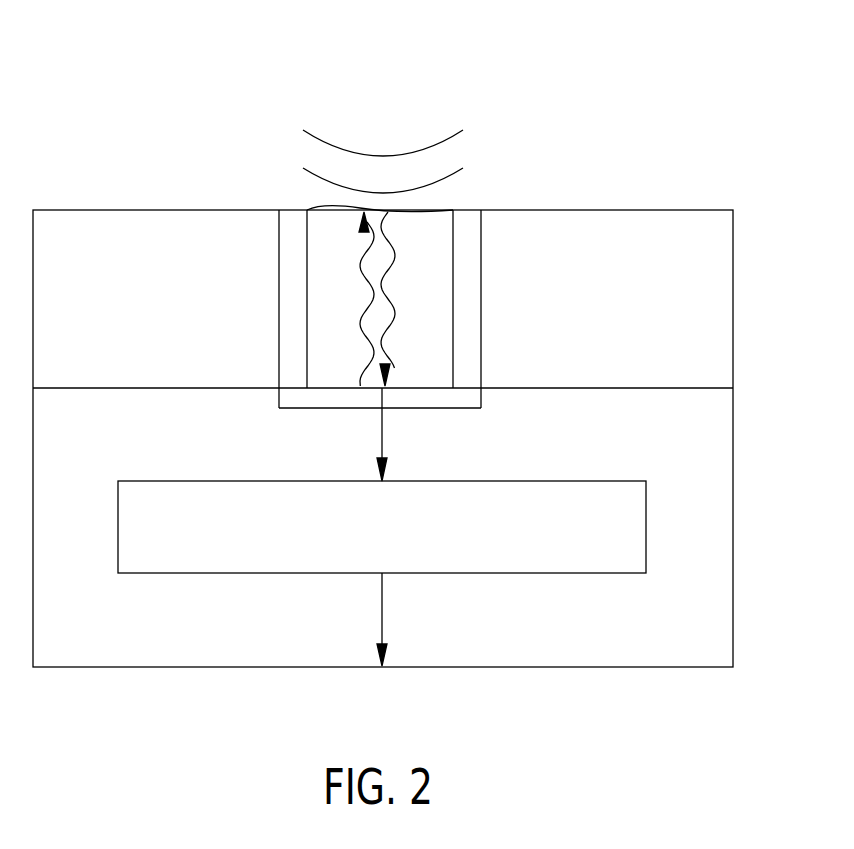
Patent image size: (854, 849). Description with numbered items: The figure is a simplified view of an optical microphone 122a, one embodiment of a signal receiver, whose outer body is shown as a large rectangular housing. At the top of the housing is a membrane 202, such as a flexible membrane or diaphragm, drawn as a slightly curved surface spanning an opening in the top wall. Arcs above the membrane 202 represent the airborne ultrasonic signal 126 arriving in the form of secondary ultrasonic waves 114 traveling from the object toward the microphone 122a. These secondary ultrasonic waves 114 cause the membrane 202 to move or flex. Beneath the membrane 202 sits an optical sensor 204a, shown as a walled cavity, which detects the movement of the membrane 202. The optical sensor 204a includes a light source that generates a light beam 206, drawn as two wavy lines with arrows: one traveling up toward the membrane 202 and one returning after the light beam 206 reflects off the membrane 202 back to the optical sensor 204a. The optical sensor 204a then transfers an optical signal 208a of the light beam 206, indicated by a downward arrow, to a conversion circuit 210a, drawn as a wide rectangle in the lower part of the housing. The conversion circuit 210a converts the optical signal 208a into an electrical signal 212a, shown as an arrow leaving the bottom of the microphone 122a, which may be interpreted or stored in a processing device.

The secondary ultrasonic waves 114 is at (372, 153).
The microphone 122a is at (718, 141).
The airborne ultrasonic signal 126 is at (226, 89).
The membrane 202 is at (428, 210).
The optical sensor 204a is at (303, 402).
The light beam 206 is at (356, 295).
The optical signal 208a is at (384, 437).
The conversion circuit 210a is at (646, 527).
The electrical signal 212a is at (384, 612).